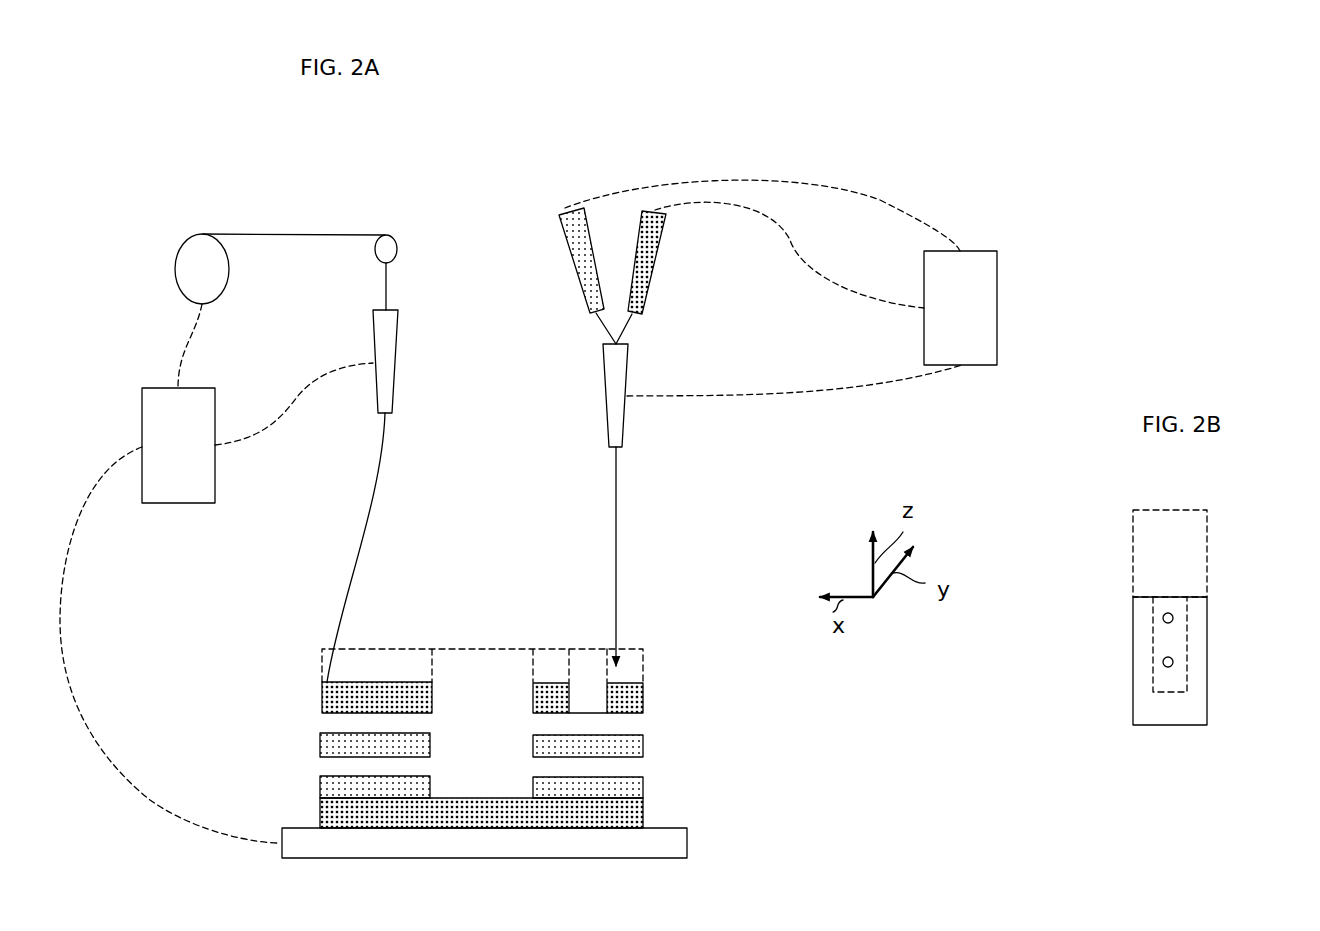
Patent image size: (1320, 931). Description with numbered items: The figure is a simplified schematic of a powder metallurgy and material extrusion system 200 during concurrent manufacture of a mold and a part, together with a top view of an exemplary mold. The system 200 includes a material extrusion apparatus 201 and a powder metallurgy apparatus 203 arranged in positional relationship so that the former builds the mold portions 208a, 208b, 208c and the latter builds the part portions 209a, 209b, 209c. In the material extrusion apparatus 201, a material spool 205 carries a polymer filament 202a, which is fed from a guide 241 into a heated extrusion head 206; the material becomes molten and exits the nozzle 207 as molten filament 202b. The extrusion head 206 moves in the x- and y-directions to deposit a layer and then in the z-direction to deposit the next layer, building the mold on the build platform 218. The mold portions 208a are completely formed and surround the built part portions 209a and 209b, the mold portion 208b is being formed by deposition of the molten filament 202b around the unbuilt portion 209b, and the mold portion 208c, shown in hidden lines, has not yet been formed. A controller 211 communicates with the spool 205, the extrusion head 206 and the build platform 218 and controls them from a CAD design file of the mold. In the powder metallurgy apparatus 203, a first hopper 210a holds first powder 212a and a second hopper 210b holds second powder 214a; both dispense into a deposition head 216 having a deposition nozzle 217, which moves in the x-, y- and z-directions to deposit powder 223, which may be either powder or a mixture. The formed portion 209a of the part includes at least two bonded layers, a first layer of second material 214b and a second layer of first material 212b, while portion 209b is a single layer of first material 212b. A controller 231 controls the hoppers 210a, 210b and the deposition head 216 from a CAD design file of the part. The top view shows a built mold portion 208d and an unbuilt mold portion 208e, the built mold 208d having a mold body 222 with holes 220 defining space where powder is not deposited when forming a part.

In FIG. 2A, the powder metallurgy and material extrusion system 200 is at (880, 157).
In FIG. 2A, the material extrusion apparatus 201 is at (410, 182).
In FIG. 2A, the filament 202a is at (298, 233).
In FIG. 2A, the molten filament 202b is at (377, 503).
In FIG. 2A, the powder metallurgy apparatus 203 is at (565, 199).
In FIG. 2A, the material spool 205 is at (172, 267).
In FIG. 2A, the extrusion head 206 is at (397, 363).
In FIG. 2A, the nozzle 207 is at (399, 425).
In FIG. 2A, the mold portions 208a is at (320, 745).
In FIG. 2A, the mold portion 208b is at (320, 700).
In FIG. 2A, the mold portion 208c is at (322, 648).
In FIG. 2B, the built mold portion 208d is at (1133, 663).
In FIG. 2B, the unbuilt mold portion 208e is at (1207, 528).
In FIG. 2A, the formed portion of the part 209a is at (307, 815).
In FIG. 2A, the portion of the part 209b is at (267, 760).
In FIG. 2A, the portion of the part 209c is at (294, 702).
In FIG. 2A, the first hopper 210a is at (572, 265).
In FIG. 2A, the second hopper 210b is at (655, 267).
In FIG. 2A, the controller 211 is at (178, 503).
In FIG. 2A, the first powder 212a is at (574, 236).
In FIG. 2A, the first material 212b is at (638, 742).
In FIG. 2A, the second powder 214a is at (650, 244).
In FIG. 2A, the second material 214b is at (643, 697).
In FIG. 2A, the deposition head 216 is at (605, 397).
In FIG. 2A, the deposition nozzle 217 is at (605, 461).
In FIG. 2A, the build platform 218 is at (687, 843).
In FIG. 2B, the holes 220 is at (1173, 618).
In FIG. 2B, the mold body 222 is at (1142, 625).
In FIG. 2A, the powder 223 is at (616, 512).
In FIG. 2A, the controller 231 is at (997, 308).
In FIG. 2A, the guide 241 is at (400, 248).